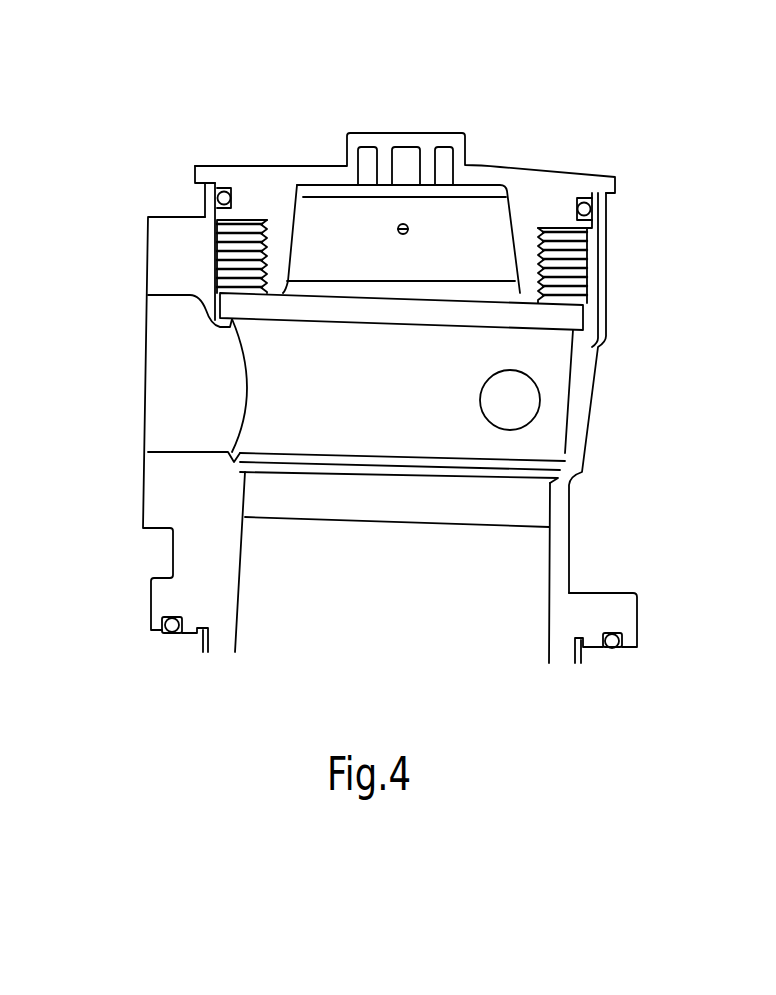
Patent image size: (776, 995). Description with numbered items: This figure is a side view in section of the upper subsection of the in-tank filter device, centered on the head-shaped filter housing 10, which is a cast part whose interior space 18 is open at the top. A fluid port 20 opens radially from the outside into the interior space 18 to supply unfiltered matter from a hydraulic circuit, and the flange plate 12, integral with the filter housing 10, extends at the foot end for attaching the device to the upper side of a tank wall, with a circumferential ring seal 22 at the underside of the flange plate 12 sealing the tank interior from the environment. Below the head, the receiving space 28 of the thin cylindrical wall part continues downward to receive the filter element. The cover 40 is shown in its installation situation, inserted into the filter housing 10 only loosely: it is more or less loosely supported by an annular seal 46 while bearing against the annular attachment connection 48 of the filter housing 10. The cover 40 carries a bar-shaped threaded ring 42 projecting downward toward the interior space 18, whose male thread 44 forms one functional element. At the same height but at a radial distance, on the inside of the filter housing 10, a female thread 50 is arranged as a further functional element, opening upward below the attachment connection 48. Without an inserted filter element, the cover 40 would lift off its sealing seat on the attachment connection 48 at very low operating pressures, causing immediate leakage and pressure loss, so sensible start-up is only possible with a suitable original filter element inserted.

The filter housing 10 is at (178, 493).
The flange plate 12 is at (617, 607).
The interior space 18 is at (378, 392).
The fluid port 20 is at (187, 377).
The ring seal 22 is at (615, 652).
The receiving space 28 is at (407, 590).
The cover 40 is at (523, 185).
The threaded ring 42 is at (588, 235).
The male thread 44 is at (582, 268).
The annular seal 46 is at (593, 207).
The attachment connection 48 is at (208, 200).
The female thread 50 is at (222, 253).